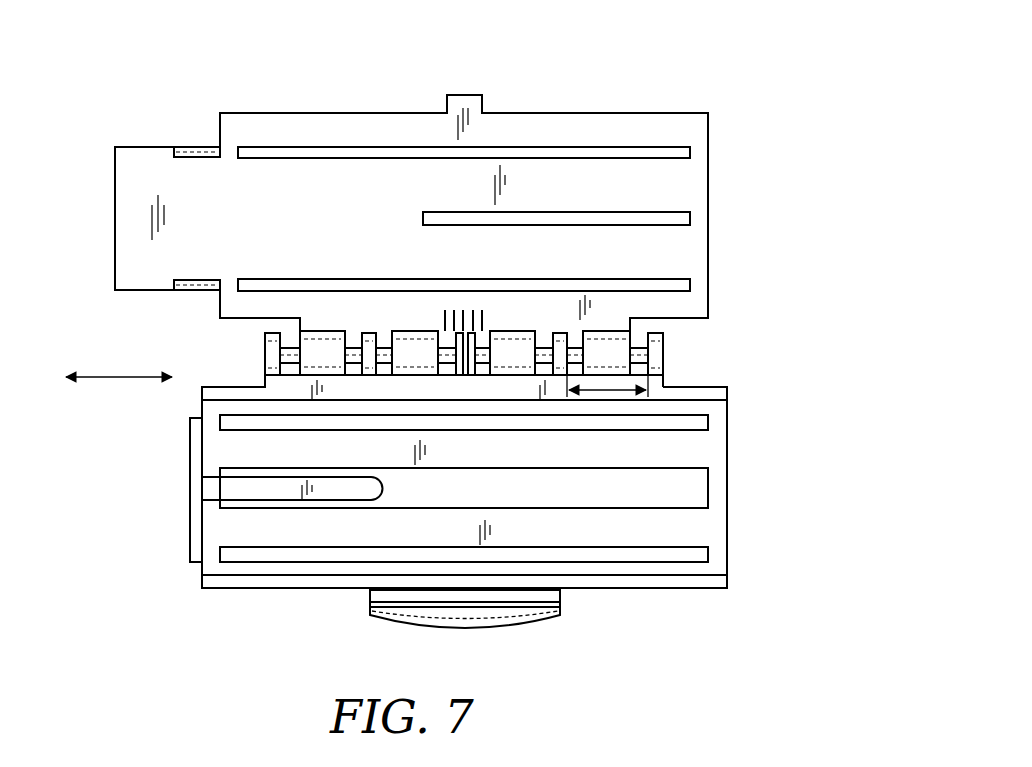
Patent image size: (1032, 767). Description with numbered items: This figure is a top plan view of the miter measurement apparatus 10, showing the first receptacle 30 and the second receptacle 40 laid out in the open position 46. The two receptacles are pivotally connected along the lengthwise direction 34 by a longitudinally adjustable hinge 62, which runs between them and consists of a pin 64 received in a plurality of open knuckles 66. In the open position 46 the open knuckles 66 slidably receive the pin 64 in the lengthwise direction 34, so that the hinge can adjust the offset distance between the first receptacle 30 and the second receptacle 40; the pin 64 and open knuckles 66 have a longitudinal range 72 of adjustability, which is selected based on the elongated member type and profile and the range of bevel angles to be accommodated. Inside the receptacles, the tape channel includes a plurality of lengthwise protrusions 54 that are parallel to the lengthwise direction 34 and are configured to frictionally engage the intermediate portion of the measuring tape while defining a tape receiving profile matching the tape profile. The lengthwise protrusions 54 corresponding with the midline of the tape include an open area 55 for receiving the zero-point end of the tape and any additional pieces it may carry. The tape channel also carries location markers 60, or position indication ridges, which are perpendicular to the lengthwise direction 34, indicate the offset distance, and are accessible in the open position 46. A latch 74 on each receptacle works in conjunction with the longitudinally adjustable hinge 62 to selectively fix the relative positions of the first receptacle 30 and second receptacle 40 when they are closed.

The measurement apparatus 10 is at (663, 64).
The first receptacle 30 is at (197, 525).
The lengthwise direction 34 is at (118, 377).
The second receptacle 40 is at (128, 227).
The open position 46 is at (733, 645).
The lengthwise protrusions 54 is at (688, 153).
The open area 55 is at (252, 490).
The location markers 60 is at (460, 312).
The longitudinally adjustable hinge 62 is at (272, 354).
The pin 64 is at (639, 345).
The open knuckles 66 is at (323, 342).
The longitudinal range 72 is at (607, 392).
The latch 74 is at (463, 95).